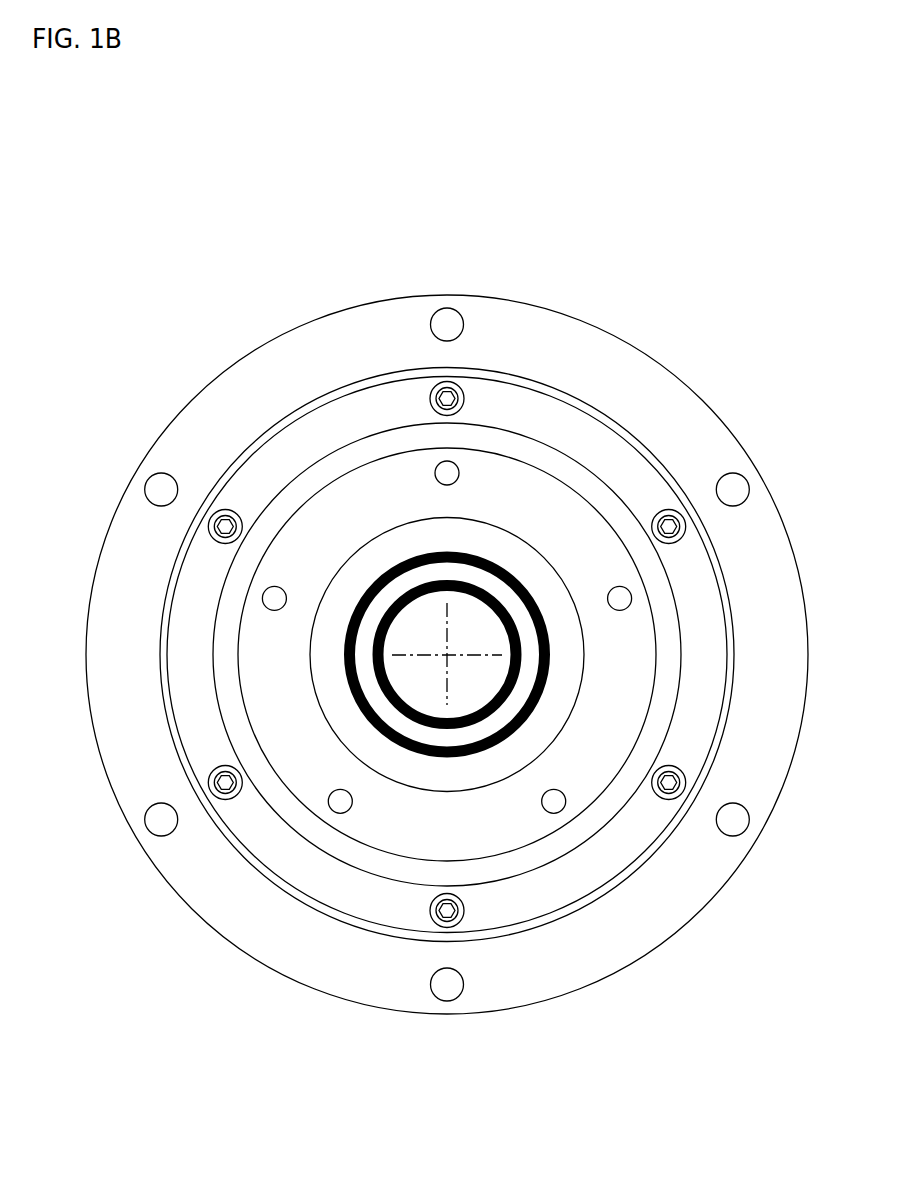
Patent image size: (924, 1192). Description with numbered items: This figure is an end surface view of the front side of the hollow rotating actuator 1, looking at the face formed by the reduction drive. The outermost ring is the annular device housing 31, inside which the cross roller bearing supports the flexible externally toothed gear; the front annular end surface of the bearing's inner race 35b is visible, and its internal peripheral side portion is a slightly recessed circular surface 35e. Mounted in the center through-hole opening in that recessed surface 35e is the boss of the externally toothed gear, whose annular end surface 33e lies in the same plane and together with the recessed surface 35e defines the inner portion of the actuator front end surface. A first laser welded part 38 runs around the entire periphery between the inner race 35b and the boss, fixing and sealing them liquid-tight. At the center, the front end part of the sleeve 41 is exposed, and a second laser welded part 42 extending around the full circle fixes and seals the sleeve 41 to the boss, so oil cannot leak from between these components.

The hollow rotating actuator 1 is at (171, 353).
The device housing 31 is at (504, 333).
The annular end surface 33e is at (497, 583).
The inner race 35b is at (500, 472).
The recessed surface 35e is at (496, 548).
The first laser welded part 38 is at (447, 553).
The sleeve 41 is at (507, 628).
The second laser welded part 42 is at (447, 582).